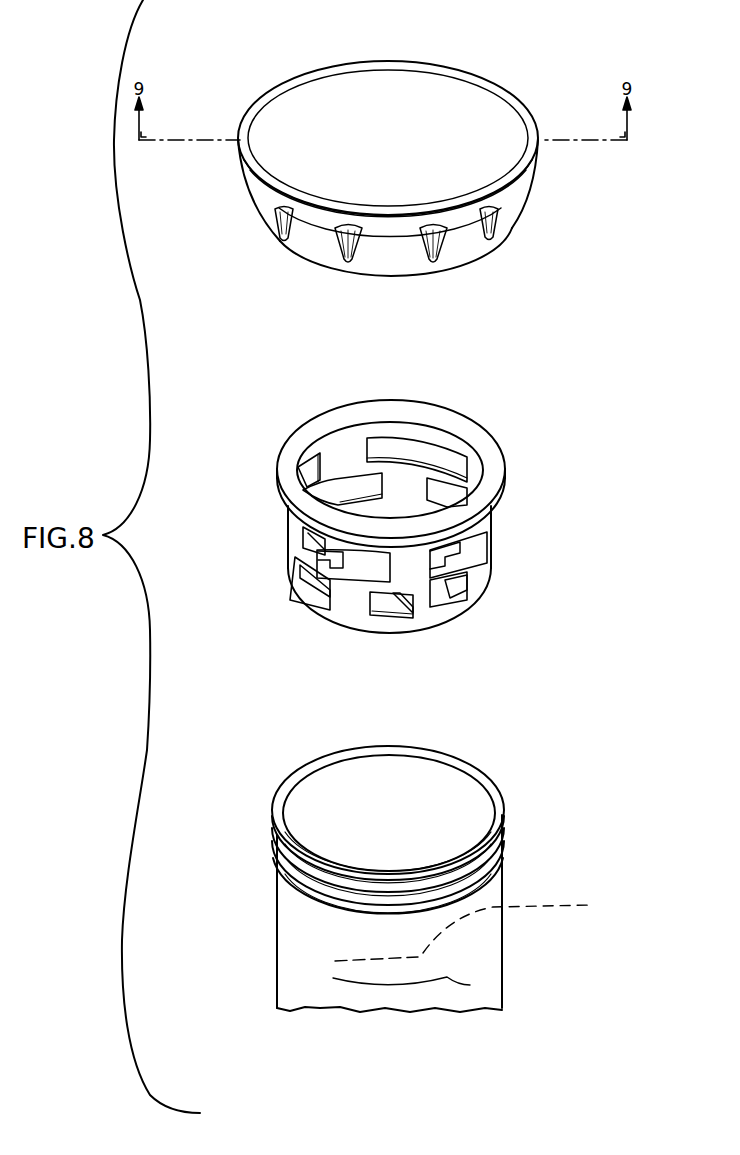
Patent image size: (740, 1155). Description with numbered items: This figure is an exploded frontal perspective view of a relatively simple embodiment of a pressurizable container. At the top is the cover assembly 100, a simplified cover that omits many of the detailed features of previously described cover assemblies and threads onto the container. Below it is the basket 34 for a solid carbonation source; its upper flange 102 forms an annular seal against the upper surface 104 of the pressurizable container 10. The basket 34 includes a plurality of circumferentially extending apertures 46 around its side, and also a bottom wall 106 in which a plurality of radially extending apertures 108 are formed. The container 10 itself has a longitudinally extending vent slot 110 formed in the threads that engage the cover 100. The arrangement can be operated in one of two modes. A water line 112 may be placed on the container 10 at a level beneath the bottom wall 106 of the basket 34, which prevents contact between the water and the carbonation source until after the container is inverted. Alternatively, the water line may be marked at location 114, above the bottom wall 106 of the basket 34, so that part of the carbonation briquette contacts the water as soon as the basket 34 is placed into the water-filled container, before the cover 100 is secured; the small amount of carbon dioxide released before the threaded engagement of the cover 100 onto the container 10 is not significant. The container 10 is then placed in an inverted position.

The cover assembly 100 is at (518, 101).
The upper flange 102 is at (462, 419).
The basket 34 is at (408, 525).
The bottom wall 106 is at (428, 607).
The radially extending apertures 108 is at (466, 556).
The circumferentially extending apertures 46 is at (463, 562).
The upper surface 104 is at (470, 767).
The pressurizable container 10 is at (404, 879).
The vent slot 110 is at (386, 922).
The water line 112 is at (470, 985).
The water line location 114 is at (523, 925).